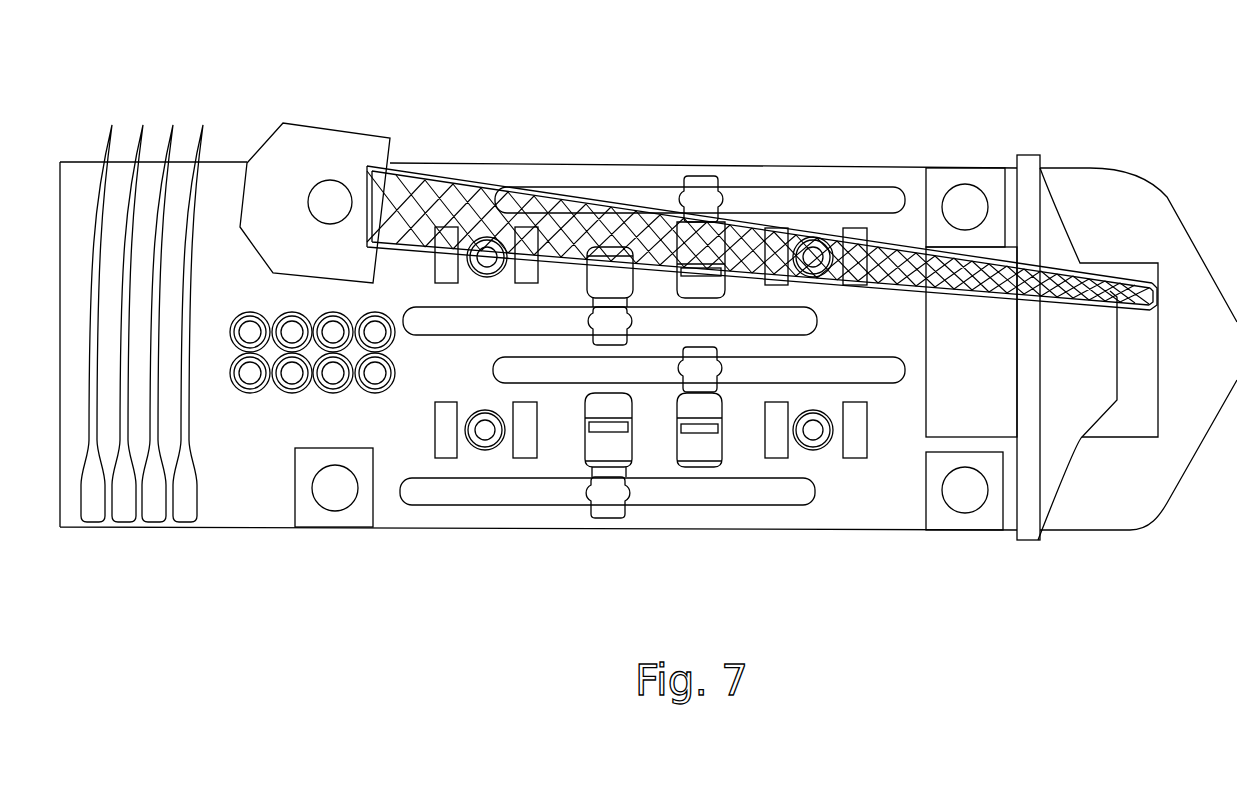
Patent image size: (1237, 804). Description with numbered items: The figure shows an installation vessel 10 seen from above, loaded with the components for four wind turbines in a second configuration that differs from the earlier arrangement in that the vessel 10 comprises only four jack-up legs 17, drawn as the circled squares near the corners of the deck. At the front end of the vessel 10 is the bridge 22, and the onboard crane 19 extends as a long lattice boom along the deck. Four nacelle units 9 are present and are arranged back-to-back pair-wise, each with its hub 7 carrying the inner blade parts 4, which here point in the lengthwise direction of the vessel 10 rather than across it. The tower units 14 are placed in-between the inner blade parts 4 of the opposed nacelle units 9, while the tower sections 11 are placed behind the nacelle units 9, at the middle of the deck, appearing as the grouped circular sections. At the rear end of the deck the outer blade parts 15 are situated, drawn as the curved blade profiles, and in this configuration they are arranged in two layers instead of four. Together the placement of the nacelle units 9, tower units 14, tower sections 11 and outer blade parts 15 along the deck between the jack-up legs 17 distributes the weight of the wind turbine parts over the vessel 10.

The vessel 10 is at (444, 62).
The nacelle units 9 is at (607, 111).
The hub 7 is at (703, 176).
The inner blade parts 4 is at (796, 196).
The onboard crane 19 is at (1028, 258).
The bridge 22 is at (1075, 363).
The tower sections 11 is at (275, 411).
The tower units 14 is at (829, 476).
The outer blade parts 15 is at (148, 544).
The jack-up legs 17 is at (333, 518).